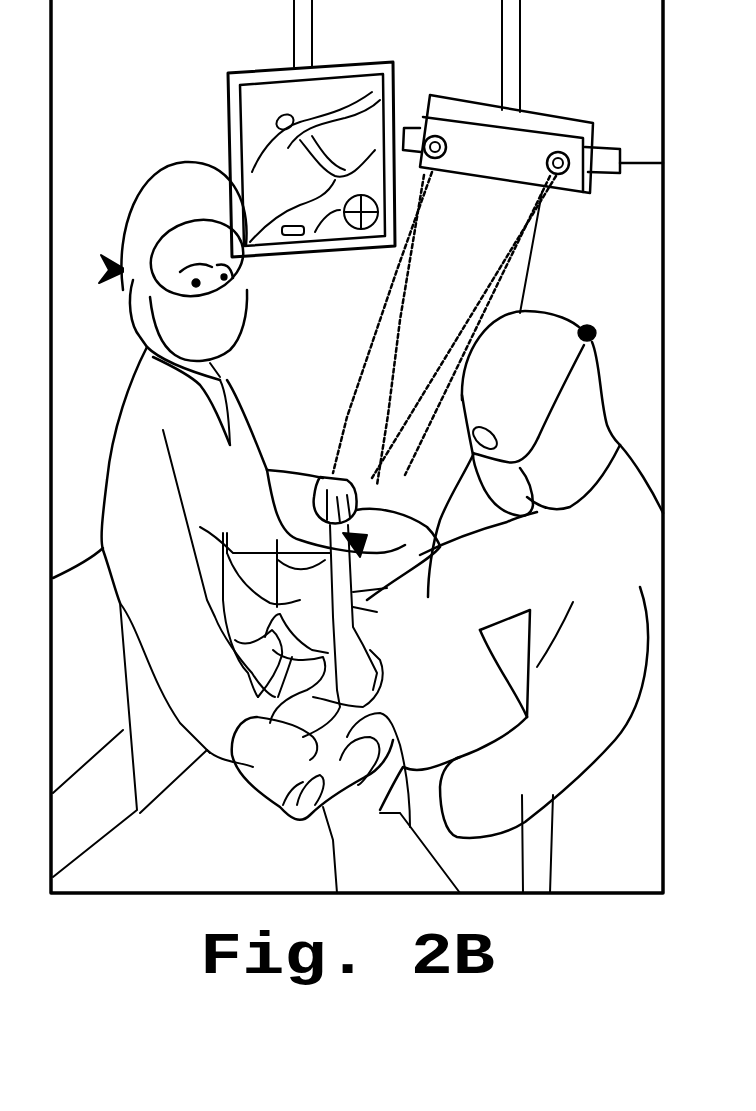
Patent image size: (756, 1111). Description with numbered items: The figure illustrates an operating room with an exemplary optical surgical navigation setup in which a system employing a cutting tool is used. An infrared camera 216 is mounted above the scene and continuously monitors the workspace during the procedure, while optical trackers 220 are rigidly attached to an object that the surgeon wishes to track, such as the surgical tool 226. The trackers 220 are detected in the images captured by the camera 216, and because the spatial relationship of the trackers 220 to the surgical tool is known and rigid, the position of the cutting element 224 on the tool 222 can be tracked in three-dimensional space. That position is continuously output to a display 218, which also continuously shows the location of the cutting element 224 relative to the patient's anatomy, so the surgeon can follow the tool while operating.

The infrared camera 216 is at (550, 113).
The display 218 is at (256, 67).
The optical trackers 220 is at (229, 527).
The tool 222 is at (522, 512).
The cutting element 224 is at (360, 615).
The surgical tool 226 is at (313, 700).